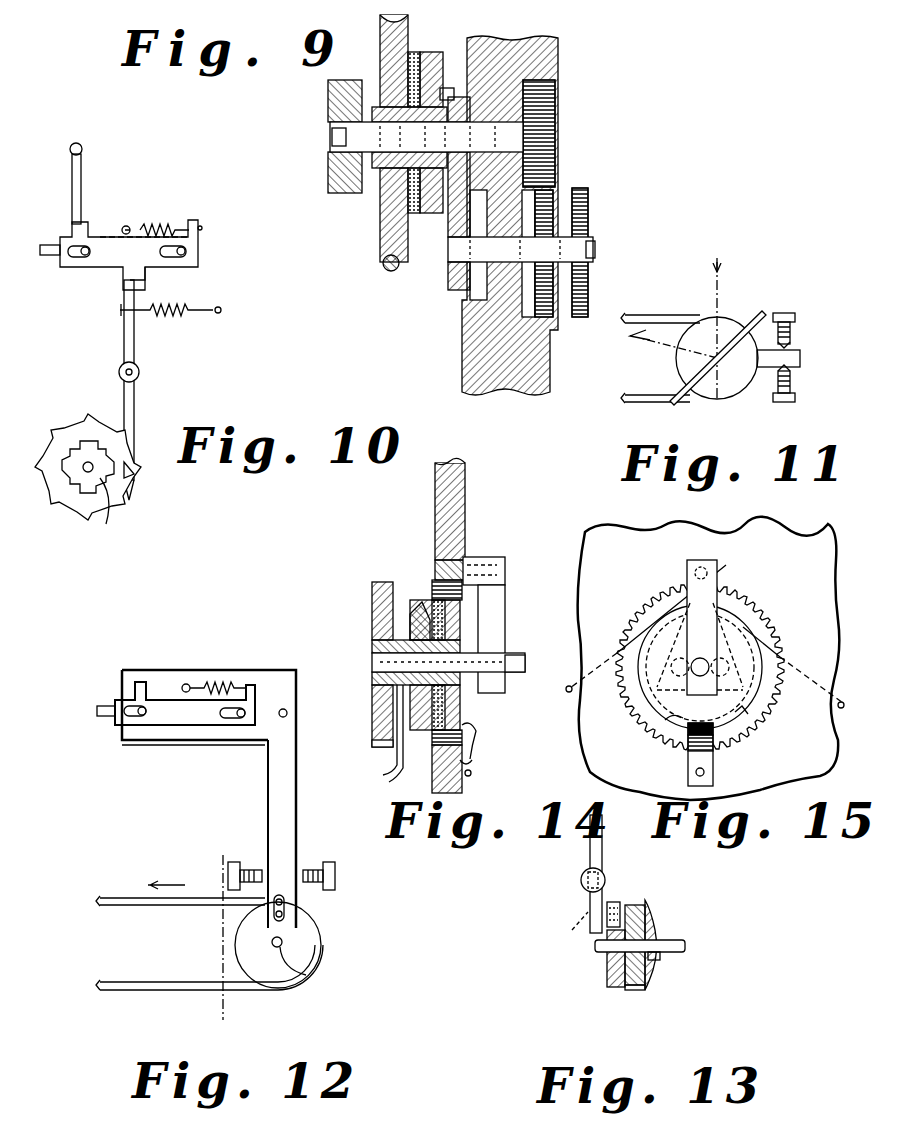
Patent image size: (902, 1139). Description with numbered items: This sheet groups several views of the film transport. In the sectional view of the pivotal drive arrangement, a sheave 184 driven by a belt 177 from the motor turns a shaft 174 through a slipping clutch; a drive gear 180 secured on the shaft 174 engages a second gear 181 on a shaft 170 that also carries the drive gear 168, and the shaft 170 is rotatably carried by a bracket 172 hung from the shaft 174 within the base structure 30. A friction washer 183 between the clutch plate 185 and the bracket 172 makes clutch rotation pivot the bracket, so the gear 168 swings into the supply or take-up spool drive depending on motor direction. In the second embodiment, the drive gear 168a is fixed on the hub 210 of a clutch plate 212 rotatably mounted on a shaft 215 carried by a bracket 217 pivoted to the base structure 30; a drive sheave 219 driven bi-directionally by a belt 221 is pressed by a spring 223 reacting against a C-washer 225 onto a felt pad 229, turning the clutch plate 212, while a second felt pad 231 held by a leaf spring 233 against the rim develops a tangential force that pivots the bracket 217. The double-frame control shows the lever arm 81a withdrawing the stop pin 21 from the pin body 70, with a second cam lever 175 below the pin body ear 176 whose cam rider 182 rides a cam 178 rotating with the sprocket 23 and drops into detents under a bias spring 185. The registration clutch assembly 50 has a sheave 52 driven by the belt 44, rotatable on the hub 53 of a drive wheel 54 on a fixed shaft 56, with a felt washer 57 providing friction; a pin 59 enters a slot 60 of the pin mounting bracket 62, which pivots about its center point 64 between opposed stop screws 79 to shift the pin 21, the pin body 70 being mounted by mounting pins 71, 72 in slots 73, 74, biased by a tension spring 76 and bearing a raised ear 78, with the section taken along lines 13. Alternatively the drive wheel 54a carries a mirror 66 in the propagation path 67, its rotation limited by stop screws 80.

In FIG. 9, the base structure 30 is at (467, 366).
In FIG. 14, the base structure 30 is at (460, 505).
In FIG. 15, the base structure 30 is at (816, 540).
In FIG. 9, the drive gear 180 is at (558, 112).
In FIG. 10, the drive gear 180 is at (70, 448).
In FIG. 9, the second gear 181 is at (554, 202).
In FIG. 9, the drive gear 168 is at (590, 206).
In FIG. 9, the shaft 170 is at (455, 248).
In FIG. 9, the bracket 172 is at (458, 290).
In FIG. 9, the sheave 184 is at (380, 244).
In FIG. 9, the belt 177 is at (386, 271).
In FIG. 9, the clutch plate 185 is at (426, 54).
In FIG. 10, the clutch plate 185 is at (183, 320).
In FIG. 9, the friction washer 183 is at (448, 90).
In FIG. 9, the second shaft 174 is at (556, 158).
In FIG. 9, the pin body ear 176 is at (372, 230).
In FIG. 10, the pin body ear 176 is at (147, 287).
In FIG. 10, the lever arm 81a is at (82, 172).
In FIG. 10, the pin body 70 is at (100, 267).
In FIG. 12, the pin body 70 is at (188, 734).
In FIG. 10, the stop pin 21 is at (54, 268).
In FIG. 12, the stop pin 21 is at (102, 717).
In FIG. 10, the second cam lever 175 is at (139, 397).
In FIG. 10, the sprocket 23 is at (74, 513).
In FIG. 10, the cam rider 182 is at (130, 472).
In FIG. 10, the cam 178 is at (121, 514).
In FIG. 11, the drive wheel 54a is at (734, 390).
In FIG. 11, the belt 44 is at (634, 402).
In FIG. 12, the belt 44 is at (123, 990).
In FIG. 13, the belt 44 is at (650, 905).
In FIG. 11, the mirror 66 is at (746, 316).
In FIG. 11, the propagation path 67 is at (710, 303).
In FIG. 11, the adjustable stop screws 80 is at (800, 336).
In FIG. 14, the bracket 217 is at (506, 570).
In FIG. 15, the bracket 217 is at (718, 582).
In FIG. 14, the drive gear 168a is at (372, 598).
In FIG. 15, the drive gear 168a is at (660, 606).
In FIG. 14, the hub 210 is at (372, 642).
In FIG. 14, the clutch plate 212 is at (465, 620).
In FIG. 15, the clutch plate 212 is at (748, 632).
In FIG. 14, the belt 221 is at (421, 596).
In FIG. 15, the belt 221 is at (775, 640).
In FIG. 14, the drive sheave 219 is at (408, 606).
In FIG. 15, the drive sheave 219 is at (745, 712).
In FIG. 14, the shaft 215 is at (515, 657).
In FIG. 14, the felt pad 229 is at (446, 704).
In FIG. 14, the second felt pad 231 is at (469, 728).
In FIG. 15, the second felt pad 231 is at (672, 726).
In FIG. 14, the leaf spring 233 is at (468, 764).
In FIG. 15, the leaf spring 233 is at (713, 764).
In FIG. 14, the C-washer 225 is at (380, 766).
In FIG. 14, the spring 223 is at (392, 783).
In FIG. 12, the center point 64 is at (300, 711).
In FIG. 12, the pin mounting bracket 62 is at (297, 828).
In FIG. 13, the pin mounting bracket 62 is at (602, 826).
In FIG. 12, the raised ear 78 is at (146, 686).
In FIG. 12, the tension spring 76 is at (216, 686).
In FIG. 12, the slot 73 is at (142, 726).
In FIG. 12, the slot 74 is at (228, 724).
In FIG. 12, the mounting pin 71 is at (150, 713).
In FIG. 12, the mounting pin 72 is at (253, 716).
In FIG. 12, the drive wheel 54 is at (312, 938).
In FIG. 13, the drive wheel 54 is at (607, 965).
In FIG. 12, the section line 13 is at (244, 855).
In FIG. 12, the stop screws 79 is at (326, 868).
In FIG. 13, the stop screws 79 is at (582, 878).
In FIG. 12, the pin 59 is at (288, 908).
In FIG. 13, the pin 59 is at (610, 902).
In FIG. 12, the fixed shaft 56 is at (306, 975).
In FIG. 13, the fixed shaft 56 is at (683, 940).
In FIG. 13, the slot 60 is at (566, 931).
In FIG. 13, the felt washer 57 is at (630, 906).
In FIG. 13, the hub 53 is at (660, 956).
In FIG. 13, the sheave 52 is at (644, 984).
In FIG. 13, the registration clutch assembly 50 is at (658, 994).